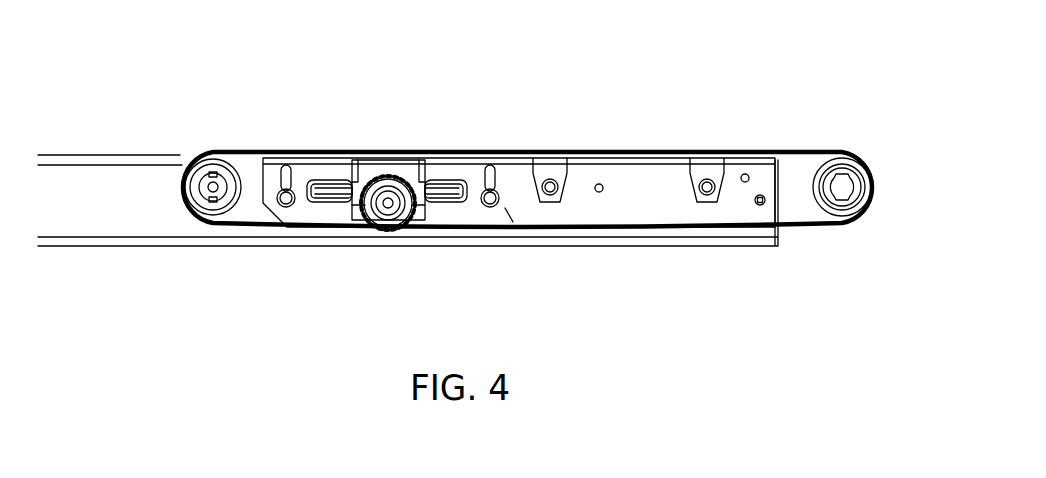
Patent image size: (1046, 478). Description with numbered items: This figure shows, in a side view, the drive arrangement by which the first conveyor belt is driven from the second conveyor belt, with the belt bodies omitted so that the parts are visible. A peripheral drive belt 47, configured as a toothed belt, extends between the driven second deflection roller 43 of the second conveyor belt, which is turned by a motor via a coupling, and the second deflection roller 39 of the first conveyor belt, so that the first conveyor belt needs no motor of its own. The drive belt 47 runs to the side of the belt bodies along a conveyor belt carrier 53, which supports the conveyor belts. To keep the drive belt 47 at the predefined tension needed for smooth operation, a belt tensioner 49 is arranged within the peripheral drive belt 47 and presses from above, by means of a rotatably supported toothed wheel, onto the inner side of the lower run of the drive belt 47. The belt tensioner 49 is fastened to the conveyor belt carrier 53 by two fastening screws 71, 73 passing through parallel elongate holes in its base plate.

The second deflection roller 39 is at (203, 167).
The second deflection roller 43 is at (838, 167).
The drive belt 47 is at (608, 155).
The belt tensioner 49 is at (323, 149).
The conveyor belt carrier 53 is at (122, 207).
The fastening screw 71 is at (285, 199).
The fastening screw 73 is at (490, 199).